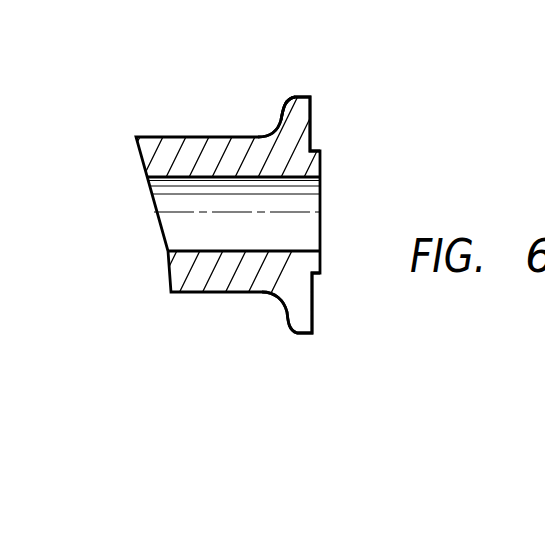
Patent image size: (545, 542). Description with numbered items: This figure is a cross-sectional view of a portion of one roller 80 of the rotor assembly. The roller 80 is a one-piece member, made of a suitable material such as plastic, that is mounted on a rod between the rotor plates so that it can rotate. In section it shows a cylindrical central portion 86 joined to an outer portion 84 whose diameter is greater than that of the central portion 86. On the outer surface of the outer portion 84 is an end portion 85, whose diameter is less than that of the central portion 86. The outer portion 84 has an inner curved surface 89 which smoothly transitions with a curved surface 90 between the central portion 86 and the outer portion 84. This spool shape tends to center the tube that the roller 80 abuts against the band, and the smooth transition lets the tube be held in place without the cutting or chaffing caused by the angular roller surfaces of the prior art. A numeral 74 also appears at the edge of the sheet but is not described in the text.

The roller 80 is at (332, 149).
The outer portion 84 is at (305, 95).
The end portion 85 is at (314, 274).
The central portion 86 is at (216, 152).
The inner curved surface 89 is at (284, 105).
The curved surface 90 is at (277, 127).
The adjacent component 74 is at (533, 11).